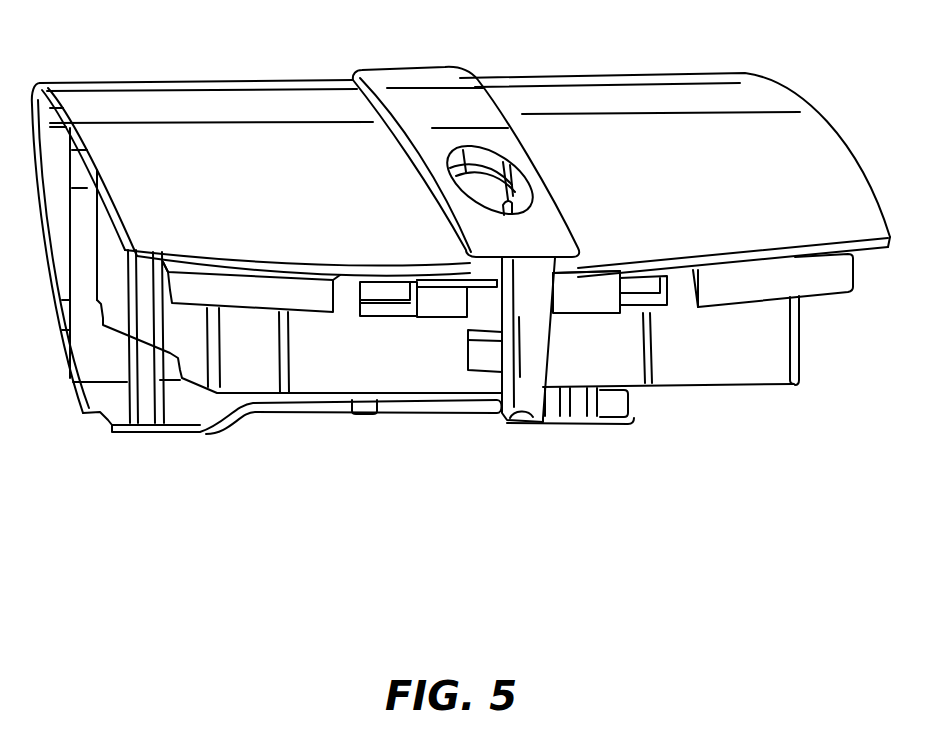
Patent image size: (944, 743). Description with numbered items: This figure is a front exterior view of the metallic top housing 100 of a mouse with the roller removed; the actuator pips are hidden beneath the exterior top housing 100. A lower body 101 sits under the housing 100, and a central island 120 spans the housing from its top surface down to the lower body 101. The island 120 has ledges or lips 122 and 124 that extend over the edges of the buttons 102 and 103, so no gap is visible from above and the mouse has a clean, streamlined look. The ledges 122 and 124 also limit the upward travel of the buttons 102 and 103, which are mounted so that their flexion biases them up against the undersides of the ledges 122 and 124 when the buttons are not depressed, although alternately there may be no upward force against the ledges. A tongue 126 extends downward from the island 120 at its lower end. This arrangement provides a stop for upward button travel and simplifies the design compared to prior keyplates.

The metallic top housing 100 is at (733, 155).
The base 101 is at (750, 335).
The button 102 is at (357, 273).
The button 103 is at (683, 263).
The island 120 is at (440, 78).
The ledge 122 is at (482, 267).
The ledge 124 is at (563, 267).
The tongue 126 is at (523, 372).